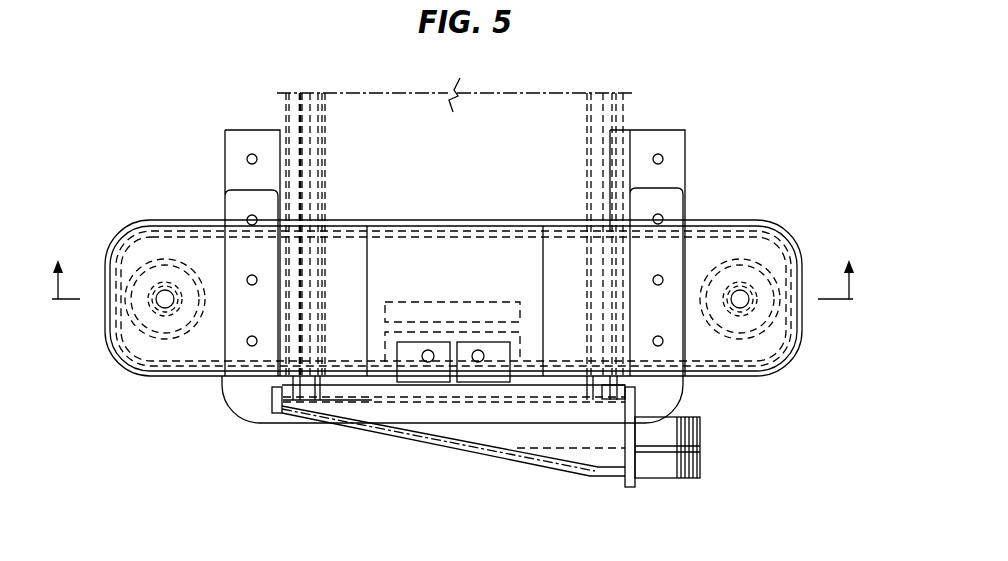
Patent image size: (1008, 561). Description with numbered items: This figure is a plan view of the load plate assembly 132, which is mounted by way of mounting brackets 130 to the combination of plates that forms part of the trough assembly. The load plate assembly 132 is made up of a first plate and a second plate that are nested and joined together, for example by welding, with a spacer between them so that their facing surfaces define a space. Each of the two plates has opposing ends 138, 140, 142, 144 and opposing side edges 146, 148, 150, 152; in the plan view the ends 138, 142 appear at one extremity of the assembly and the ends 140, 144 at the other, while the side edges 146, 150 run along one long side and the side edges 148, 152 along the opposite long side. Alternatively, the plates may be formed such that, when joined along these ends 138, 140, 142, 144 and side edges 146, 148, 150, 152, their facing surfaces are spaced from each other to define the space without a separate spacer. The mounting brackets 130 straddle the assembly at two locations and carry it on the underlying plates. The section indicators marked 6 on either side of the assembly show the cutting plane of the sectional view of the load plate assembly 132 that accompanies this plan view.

The section line 6- 6 is at (455, 295).
The mounting brackets 130 is at (677, 207).
The load plate assembly 132 is at (790, 219).
The end 138 is at (146, 338).
The end 142 is at (117, 360).
The end 140 is at (780, 338).
The end 144 is at (790, 353).
The side edge 146 is at (454, 273).
The side edge 150 is at (372, 197).
The side edge 148 is at (433, 431).
The side edge 152 is at (208, 391).